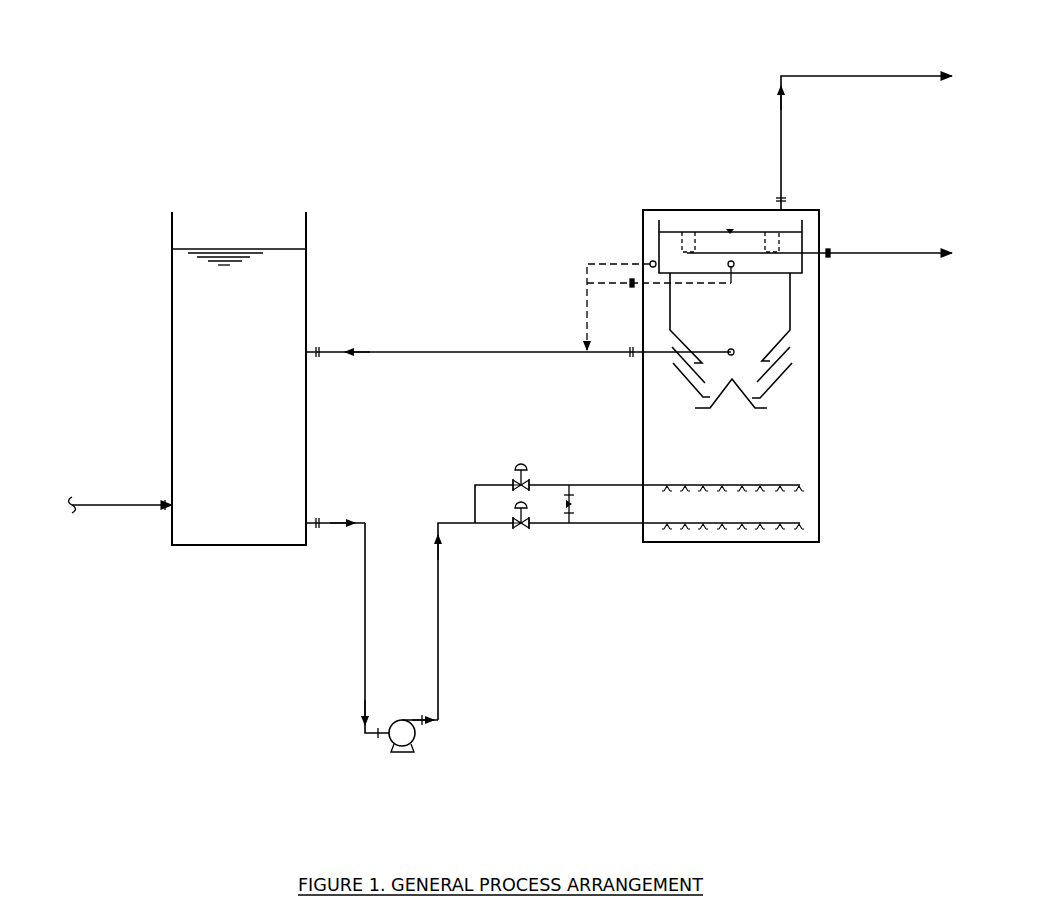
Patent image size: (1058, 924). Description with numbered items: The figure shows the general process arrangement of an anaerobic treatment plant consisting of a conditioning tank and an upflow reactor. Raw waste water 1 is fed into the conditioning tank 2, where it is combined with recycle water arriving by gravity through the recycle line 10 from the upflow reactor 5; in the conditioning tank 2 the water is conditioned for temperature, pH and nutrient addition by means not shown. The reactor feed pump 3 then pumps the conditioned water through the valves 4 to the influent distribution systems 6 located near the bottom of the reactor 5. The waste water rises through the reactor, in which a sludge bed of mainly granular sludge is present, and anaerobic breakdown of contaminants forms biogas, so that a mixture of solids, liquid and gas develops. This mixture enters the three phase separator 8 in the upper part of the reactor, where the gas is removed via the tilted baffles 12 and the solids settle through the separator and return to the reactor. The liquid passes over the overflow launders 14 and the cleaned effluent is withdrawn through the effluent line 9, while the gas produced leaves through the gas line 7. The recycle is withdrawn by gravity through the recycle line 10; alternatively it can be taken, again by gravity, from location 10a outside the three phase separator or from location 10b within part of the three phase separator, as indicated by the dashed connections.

The raw waste water 1 is at (127, 503).
The conditioning tank 2 is at (307, 275).
The reactor feed pump 3 is at (420, 741).
The valves 4 is at (523, 528).
The upflow reactor 5 is at (823, 501).
The influent distribution systems 6 is at (728, 528).
The gas line 7 is at (860, 72).
The three phase separator 8 is at (794, 303).
The effluent line 9 is at (860, 250).
The recycle line 10 is at (408, 351).
The recycle withdrawal location outside the separator 10a is at (620, 262).
The recycle withdrawal location in the separator 10b is at (693, 287).
The tilted baffles 12 is at (778, 388).
The overflow launders 14 is at (690, 230).